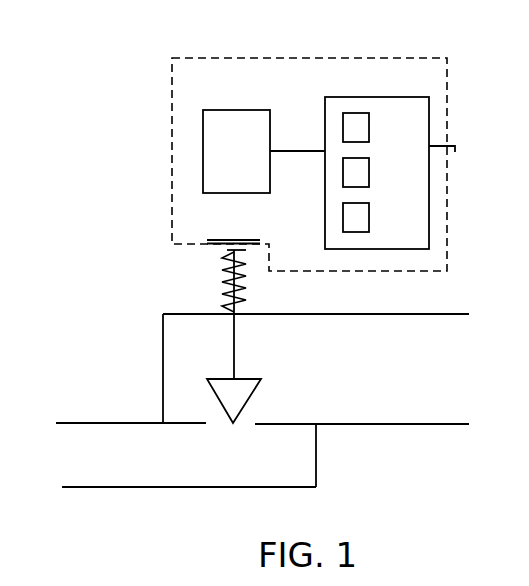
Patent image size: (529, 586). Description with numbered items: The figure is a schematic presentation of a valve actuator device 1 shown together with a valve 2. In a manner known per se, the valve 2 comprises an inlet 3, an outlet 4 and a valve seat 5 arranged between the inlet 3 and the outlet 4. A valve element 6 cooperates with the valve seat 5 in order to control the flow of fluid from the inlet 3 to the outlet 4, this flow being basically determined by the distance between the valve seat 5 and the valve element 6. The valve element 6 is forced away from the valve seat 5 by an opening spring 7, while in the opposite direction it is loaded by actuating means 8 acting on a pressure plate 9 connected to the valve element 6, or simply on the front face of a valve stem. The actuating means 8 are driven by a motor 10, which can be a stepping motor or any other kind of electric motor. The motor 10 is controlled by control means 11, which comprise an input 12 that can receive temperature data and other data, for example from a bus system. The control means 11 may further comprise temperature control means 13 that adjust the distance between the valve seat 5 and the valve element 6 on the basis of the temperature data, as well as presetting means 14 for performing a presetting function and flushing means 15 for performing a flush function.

The valve actuator device 1 is at (410, 58).
The valve 2 is at (124, 363).
The inlet 3 is at (80, 465).
The outlet 4 is at (450, 365).
The valve seat 5 is at (260, 425).
The valve element 6 is at (240, 397).
The opening spring 7 is at (226, 281).
The actuating means 8 is at (220, 238).
The pressure plate 9 is at (226, 251).
The motor 10 is at (215, 133).
The control means 11 is at (418, 111).
The input 12 is at (455, 152).
The temperature control means 13 is at (360, 215).
The presetting means 14 is at (352, 122).
The flushing means 15 is at (357, 172).